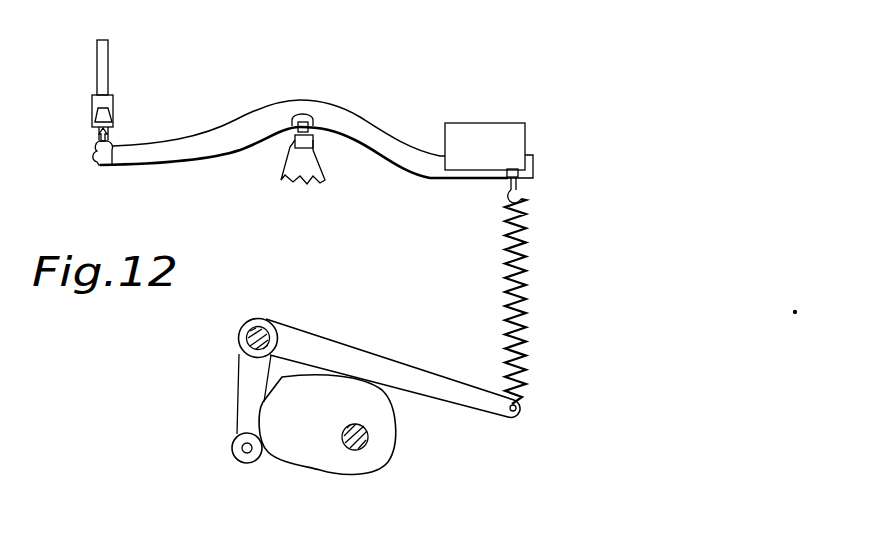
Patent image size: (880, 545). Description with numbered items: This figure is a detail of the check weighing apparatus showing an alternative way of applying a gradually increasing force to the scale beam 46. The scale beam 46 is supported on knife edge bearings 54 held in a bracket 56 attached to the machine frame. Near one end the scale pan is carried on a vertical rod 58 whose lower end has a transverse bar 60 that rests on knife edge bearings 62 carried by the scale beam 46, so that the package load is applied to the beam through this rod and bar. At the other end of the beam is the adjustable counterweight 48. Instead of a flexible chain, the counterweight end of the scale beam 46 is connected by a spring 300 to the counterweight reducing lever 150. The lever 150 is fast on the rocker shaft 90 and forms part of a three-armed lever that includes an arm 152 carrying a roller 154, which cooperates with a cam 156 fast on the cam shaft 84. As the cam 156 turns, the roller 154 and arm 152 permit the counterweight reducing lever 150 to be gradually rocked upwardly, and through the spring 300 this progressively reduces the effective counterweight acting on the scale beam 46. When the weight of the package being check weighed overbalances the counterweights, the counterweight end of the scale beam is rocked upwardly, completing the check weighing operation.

The scale beam 46 is at (271, 108).
The adjustable counterweight 48 is at (488, 127).
The knife edge bearings 54 is at (291, 151).
The bracket 56 is at (322, 172).
The vertical rod 58 is at (97, 66).
The transverse bar 60 is at (101, 116).
The knife edge bearings 62 is at (93, 152).
The cam shaft 84 is at (370, 430).
The rocker shaft 90 is at (238, 334).
The counterweight reducing lever 150 is at (355, 353).
The arm 152 is at (240, 393).
The roller 154 is at (232, 448).
The cam 156 is at (290, 455).
The spring 300 is at (525, 283).